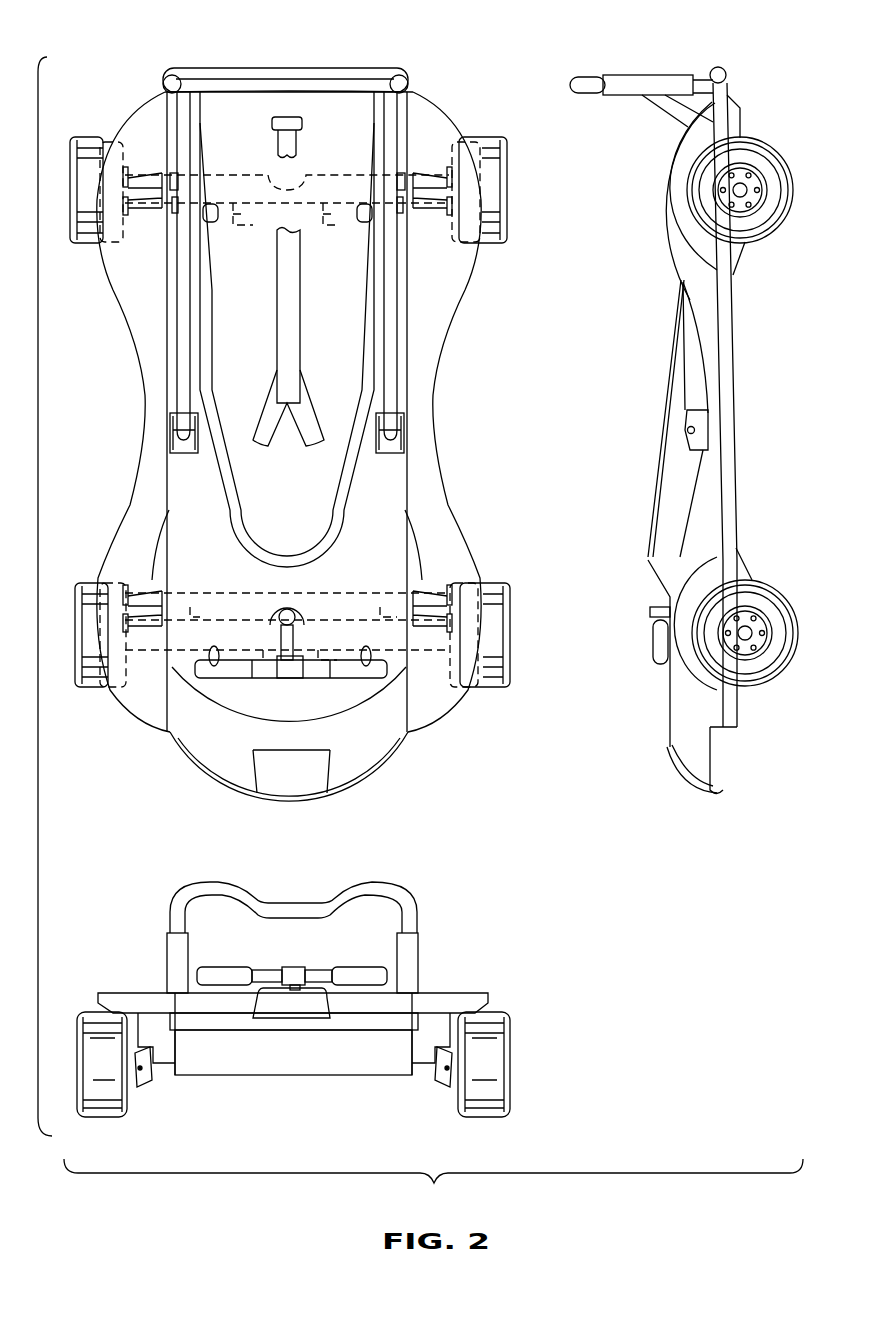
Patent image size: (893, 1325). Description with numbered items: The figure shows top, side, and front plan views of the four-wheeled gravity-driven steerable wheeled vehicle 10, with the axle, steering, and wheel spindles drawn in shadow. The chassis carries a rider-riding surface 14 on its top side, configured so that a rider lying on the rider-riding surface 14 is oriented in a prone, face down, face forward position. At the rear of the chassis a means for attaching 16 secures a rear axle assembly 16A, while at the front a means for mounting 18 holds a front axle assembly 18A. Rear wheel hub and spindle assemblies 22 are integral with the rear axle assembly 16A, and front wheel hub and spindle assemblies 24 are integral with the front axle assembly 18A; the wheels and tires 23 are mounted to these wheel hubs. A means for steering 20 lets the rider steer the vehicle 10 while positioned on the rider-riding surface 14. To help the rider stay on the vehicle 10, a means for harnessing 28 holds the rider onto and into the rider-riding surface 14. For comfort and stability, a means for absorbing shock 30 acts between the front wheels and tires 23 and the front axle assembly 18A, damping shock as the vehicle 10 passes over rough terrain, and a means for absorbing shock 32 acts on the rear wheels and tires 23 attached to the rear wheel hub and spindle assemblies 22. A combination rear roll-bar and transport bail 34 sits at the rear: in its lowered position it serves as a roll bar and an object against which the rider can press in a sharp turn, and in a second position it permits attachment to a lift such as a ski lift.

The four-wheeled gravity-driven steerable wheeled vehicle 10 is at (126, 58).
The rider-riding surface 14 is at (307, 504).
The means for attaching 16 is at (388, 187).
The rear axle assembly 16A is at (240, 185).
The means for mounting 18 is at (398, 665).
The front axle assembly 18A is at (305, 672).
The means for steering 20 is at (303, 610).
The rear wheel hub and spindle assemblies 22 is at (130, 215).
The wheels and tires 23 is at (92, 145).
The front wheel hub and spindle assemblies 24 is at (127, 687).
The means for harnessing 28 is at (285, 320).
The means for absorbing shock 30 is at (230, 672).
The means for absorbing shock 32 is at (349, 215).
The combination rear roll-bar and transport bail 34 is at (340, 88).